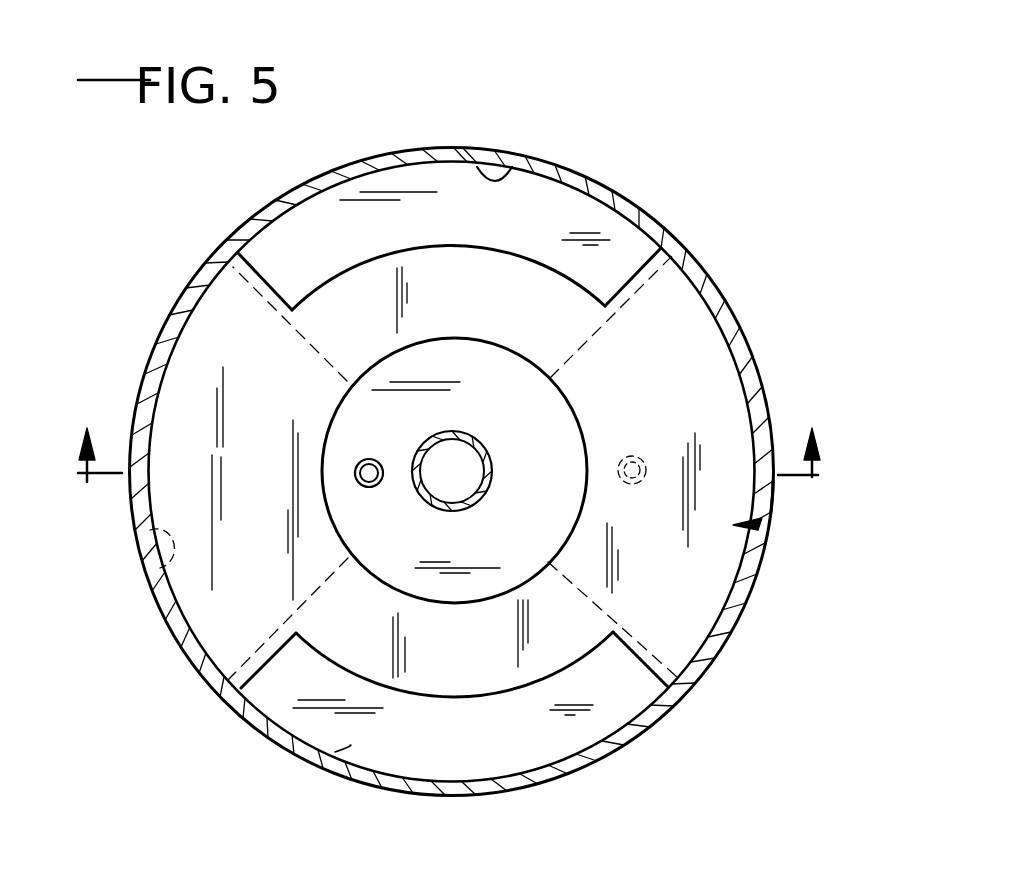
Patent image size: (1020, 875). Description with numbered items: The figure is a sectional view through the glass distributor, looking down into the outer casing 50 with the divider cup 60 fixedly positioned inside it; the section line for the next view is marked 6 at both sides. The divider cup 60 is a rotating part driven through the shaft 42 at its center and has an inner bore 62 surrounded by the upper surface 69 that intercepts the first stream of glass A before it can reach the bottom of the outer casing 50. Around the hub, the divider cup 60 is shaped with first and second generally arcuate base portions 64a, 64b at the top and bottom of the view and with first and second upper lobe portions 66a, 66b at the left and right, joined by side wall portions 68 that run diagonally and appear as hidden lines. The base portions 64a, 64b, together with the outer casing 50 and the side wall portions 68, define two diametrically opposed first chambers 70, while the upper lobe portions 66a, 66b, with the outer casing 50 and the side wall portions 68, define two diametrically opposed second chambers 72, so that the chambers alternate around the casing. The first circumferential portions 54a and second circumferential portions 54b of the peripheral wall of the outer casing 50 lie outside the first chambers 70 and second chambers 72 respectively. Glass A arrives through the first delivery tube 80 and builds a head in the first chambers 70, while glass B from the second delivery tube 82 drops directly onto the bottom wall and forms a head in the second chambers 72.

The outer casing 50 is at (435, 787).
The first diametrically opposed circumferential portions 54a is at (442, 152).
The second diametrically opposed circumferential portions 54b is at (148, 365).
The first chambers 70 is at (513, 175).
The first generally arcuate base portion 64a is at (508, 685).
The second generally arcuate base portion 64b is at (530, 277).
The side wall portions 68 is at (271, 268).
The second chambers 72 is at (140, 540).
The inner bore 62 is at (583, 483).
The shaft 42 is at (463, 511).
The second delivery tube 82 is at (370, 487).
The first delivery tube 80 is at (633, 456).
The upper surface 69 is at (738, 492).
The divider cup 60 is at (735, 525).
The first upper lobe portion 66a is at (707, 615).
The second upper lobe portion 66b is at (185, 585).
The section line 6- 6 is at (451, 468).